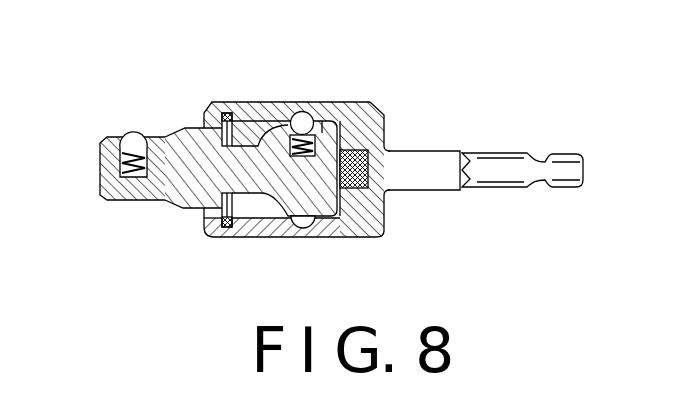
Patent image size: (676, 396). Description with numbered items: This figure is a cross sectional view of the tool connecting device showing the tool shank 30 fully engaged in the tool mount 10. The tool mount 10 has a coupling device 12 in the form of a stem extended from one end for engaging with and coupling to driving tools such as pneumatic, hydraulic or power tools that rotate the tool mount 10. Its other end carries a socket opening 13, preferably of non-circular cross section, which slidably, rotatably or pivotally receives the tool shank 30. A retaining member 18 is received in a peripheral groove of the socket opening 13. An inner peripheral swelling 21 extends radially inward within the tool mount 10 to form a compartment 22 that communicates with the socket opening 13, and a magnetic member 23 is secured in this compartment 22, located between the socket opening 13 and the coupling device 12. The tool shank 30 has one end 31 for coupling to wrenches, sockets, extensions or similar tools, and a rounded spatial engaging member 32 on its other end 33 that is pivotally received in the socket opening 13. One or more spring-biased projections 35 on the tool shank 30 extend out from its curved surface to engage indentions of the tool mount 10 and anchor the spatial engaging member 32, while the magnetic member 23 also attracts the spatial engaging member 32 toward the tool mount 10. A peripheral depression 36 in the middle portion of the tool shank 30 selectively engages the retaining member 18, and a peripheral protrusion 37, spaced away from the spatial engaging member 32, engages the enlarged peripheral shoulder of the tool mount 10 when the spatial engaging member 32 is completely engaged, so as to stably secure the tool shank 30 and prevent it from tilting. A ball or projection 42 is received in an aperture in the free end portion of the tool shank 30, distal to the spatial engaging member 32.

The tool mount 10 is at (378, 222).
The coupling device (stem) 12 is at (503, 165).
The socket opening 13 is at (258, 126).
The retaining member 18 is at (228, 228).
The inner peripheral swelling 21 is at (352, 195).
The compartment 22 is at (403, 158).
The magnetic member 23 is at (368, 118).
The tool shank 30 is at (155, 188).
The one end (of tool shank) 31 is at (103, 178).
The spatial engaging member 32 is at (312, 212).
The other end (of tool shank) 33 is at (327, 130).
The spring-biased projection 35 is at (303, 111).
The peripheral depression 36 is at (227, 113).
The peripheral protrusion 37 is at (210, 218).
The ball or projection 42 is at (133, 131).